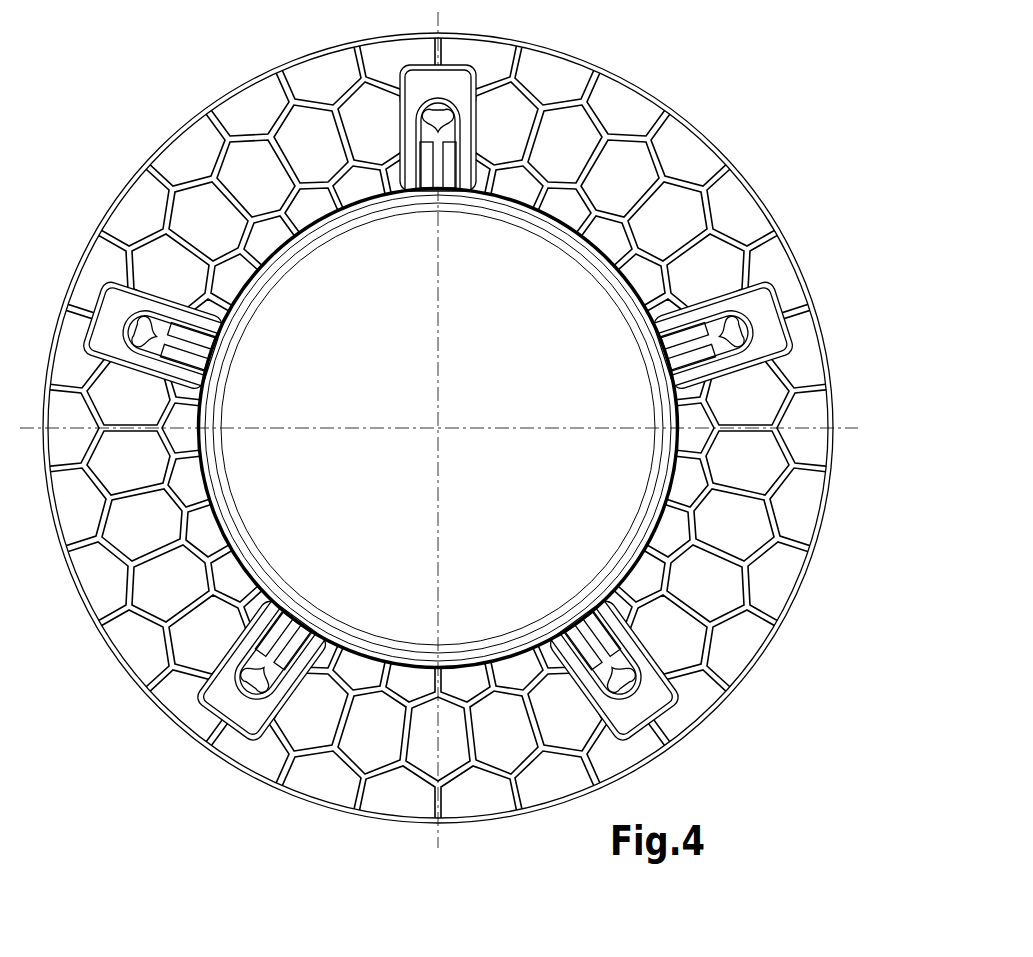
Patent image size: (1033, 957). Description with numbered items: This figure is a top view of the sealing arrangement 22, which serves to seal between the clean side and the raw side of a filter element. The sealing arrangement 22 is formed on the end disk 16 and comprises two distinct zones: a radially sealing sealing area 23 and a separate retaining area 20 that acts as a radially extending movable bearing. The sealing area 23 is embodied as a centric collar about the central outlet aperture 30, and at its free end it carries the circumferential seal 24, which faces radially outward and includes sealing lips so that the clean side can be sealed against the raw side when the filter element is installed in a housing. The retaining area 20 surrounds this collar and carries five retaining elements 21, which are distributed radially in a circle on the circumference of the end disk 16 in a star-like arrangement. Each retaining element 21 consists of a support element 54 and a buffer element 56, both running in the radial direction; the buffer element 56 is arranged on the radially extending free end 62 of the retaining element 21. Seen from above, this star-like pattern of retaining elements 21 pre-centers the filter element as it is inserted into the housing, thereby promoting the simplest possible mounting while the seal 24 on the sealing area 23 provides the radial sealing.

The end disk 16 is at (158, 108).
The sealing arrangement 22 is at (752, 145).
The retaining area 20 is at (716, 280).
The retaining element 21 is at (764, 334).
The free end 62 is at (747, 357).
The support element 54 is at (656, 370).
The buffer element 56 is at (752, 308).
The sealing area 23 is at (618, 315).
The seal 24 is at (603, 258).
The outlet aperture 30 is at (500, 484).